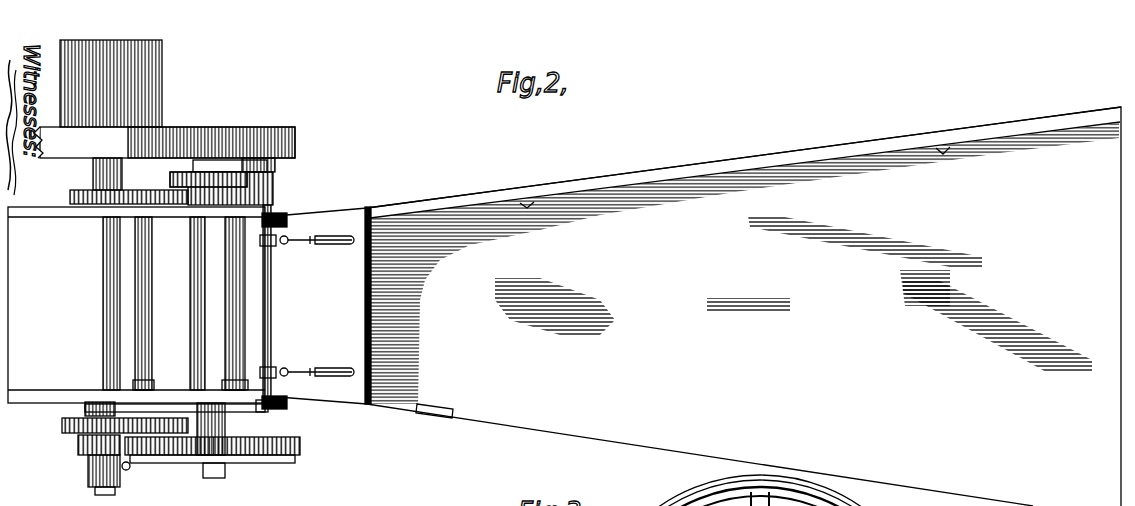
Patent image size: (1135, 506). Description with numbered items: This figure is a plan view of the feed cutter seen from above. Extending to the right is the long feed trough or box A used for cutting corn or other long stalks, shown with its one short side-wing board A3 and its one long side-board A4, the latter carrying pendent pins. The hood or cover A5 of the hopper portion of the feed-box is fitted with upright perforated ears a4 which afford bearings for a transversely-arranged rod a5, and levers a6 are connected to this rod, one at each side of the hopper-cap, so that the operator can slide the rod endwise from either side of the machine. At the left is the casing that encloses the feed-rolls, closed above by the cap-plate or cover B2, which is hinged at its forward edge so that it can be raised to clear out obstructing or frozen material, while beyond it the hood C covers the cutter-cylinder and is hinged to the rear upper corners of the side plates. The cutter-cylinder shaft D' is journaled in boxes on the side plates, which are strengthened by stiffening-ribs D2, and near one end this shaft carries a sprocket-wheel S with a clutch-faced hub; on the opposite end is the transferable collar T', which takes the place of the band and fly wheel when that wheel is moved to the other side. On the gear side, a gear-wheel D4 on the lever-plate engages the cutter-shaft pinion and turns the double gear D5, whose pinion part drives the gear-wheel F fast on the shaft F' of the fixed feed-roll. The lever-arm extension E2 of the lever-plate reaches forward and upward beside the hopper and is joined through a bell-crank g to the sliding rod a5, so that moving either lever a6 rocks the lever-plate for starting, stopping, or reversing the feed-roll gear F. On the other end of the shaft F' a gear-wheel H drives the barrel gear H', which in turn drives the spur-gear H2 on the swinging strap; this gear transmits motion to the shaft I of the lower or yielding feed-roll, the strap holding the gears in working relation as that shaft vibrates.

The shaft I is at (163, 108).
The barrel gear H' is at (250, 163).
The gear-wheel H is at (245, 188).
The spur-gear H2 is at (170, 178).
The sprocket-wheel S is at (84, 191).
The hood C is at (136, 305).
The cap-plate B2 is at (175, 303).
The rod a5 is at (279, 303).
The perforated ears a4 is at (276, 214).
The levers a6 is at (290, 248).
The lever-arm extension E2 is at (250, 412).
The bell-crank g is at (268, 406).
The stiffening-ribs D2 is at (85, 406).
The gear-wheel D5 is at (195, 428).
The gear-wheel D4 is at (78, 449).
The gear-wheel F is at (222, 433).
The collar T' is at (95, 471).
The shaft F' is at (221, 475).
The cutter-cylinder shaft D' is at (107, 496).
The feed-box A is at (698, 306).
The long side-board A4 is at (688, 165).
The hood A5 is at (349, 305).
The short side-wing board A3 is at (432, 415).